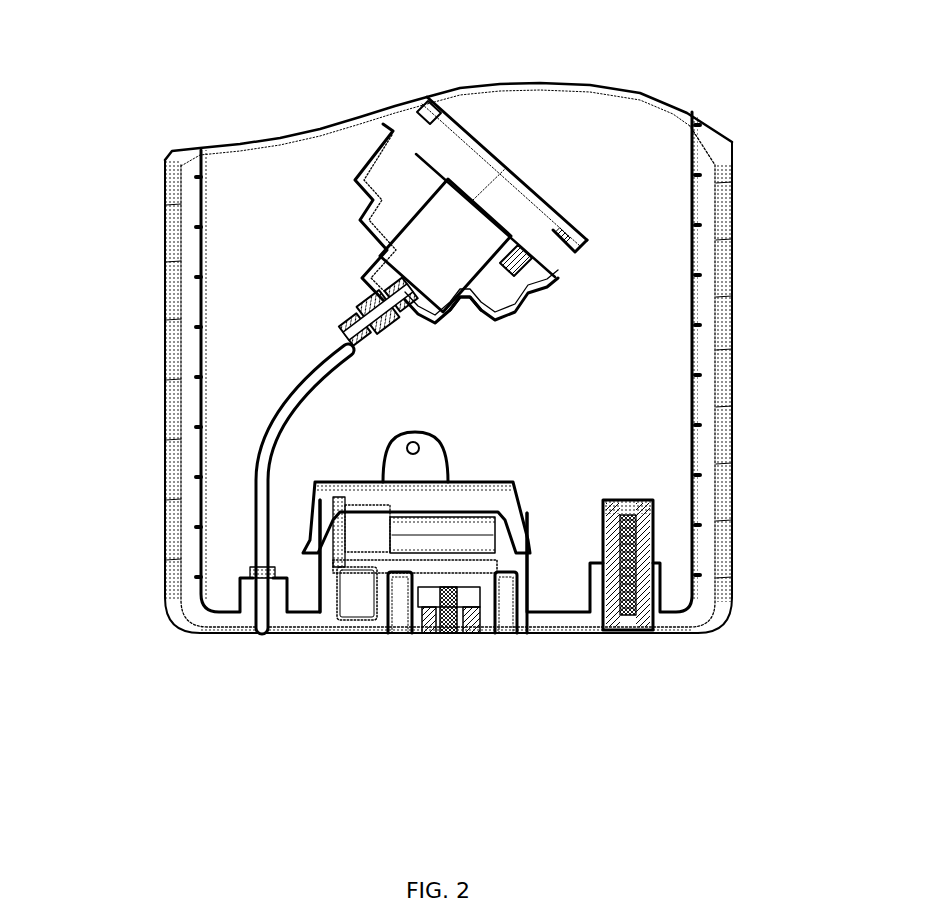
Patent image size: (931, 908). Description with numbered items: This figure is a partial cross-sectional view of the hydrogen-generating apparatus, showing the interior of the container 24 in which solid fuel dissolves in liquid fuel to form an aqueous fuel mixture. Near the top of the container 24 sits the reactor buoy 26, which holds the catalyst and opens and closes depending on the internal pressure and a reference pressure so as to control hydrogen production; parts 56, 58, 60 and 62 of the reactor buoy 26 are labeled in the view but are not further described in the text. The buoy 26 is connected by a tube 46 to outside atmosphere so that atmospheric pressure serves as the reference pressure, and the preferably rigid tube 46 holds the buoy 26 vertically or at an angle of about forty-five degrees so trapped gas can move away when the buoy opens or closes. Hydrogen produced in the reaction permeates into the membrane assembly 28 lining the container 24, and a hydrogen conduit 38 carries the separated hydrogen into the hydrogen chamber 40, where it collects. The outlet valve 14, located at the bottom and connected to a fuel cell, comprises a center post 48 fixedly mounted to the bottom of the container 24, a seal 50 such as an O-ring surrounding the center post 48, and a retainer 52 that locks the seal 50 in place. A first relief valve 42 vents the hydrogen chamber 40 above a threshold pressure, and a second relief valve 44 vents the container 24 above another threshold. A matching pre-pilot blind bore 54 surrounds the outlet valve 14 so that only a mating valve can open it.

The outlet valve 14 is at (427, 658).
The container 24 is at (715, 207).
The reactor buoy 26 is at (486, 189).
The membrane assembly 28 is at (692, 147).
The hydrogen conduit 38 is at (393, 460).
The hydrogen chamber 40 is at (472, 507).
The first relief valve 42 is at (340, 613).
The second relief valve 44 is at (637, 630).
The tube 46 is at (273, 447).
The center post 48 is at (453, 633).
The seal 50 is at (420, 620).
The retainer 52 is at (424, 630).
The pre-pilot blind bore 54 is at (503, 610).
The outer shell of nozzle assembly 56 is at (467, 270).
The flange 58 is at (527, 268).
The nozzle body 60 is at (525, 208).
The shell bottom wall 62 is at (470, 299).